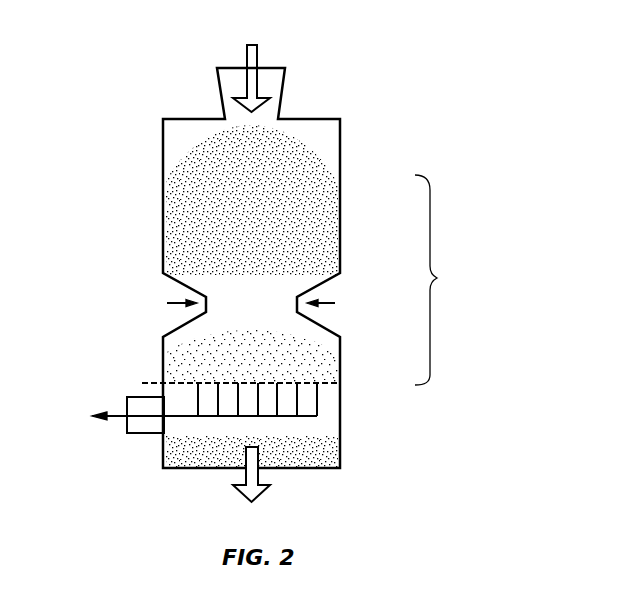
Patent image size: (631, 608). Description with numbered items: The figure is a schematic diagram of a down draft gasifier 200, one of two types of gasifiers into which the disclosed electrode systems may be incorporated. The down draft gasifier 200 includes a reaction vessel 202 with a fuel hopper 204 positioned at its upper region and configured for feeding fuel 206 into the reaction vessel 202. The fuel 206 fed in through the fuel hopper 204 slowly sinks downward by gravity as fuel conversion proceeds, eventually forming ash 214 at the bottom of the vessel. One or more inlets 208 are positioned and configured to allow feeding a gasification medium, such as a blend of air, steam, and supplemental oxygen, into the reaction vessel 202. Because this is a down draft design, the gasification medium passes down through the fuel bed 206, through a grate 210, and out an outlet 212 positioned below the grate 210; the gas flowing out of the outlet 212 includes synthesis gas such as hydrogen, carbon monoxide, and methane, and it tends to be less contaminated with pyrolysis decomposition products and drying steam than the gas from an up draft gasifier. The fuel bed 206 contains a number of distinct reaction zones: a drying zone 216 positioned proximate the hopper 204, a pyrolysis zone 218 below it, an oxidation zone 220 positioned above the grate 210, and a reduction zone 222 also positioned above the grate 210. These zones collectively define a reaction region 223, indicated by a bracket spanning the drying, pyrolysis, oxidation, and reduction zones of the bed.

The down draft gasifier 200 is at (395, 58).
The reaction vessel 202 is at (163, 143).
The fuel hopper 204 is at (272, 85).
The fuel 206 is at (198, 217).
The inlets 208 is at (203, 303).
The grate 210 is at (322, 383).
The outlet 212 is at (142, 435).
The ash 214 is at (303, 457).
The drying zone 216 is at (308, 185).
The pyrolysis zone 218 is at (302, 230).
The oxidation zone 220 is at (302, 315).
The reduction zone 222 is at (300, 363).
The reaction region 223 is at (454, 280).